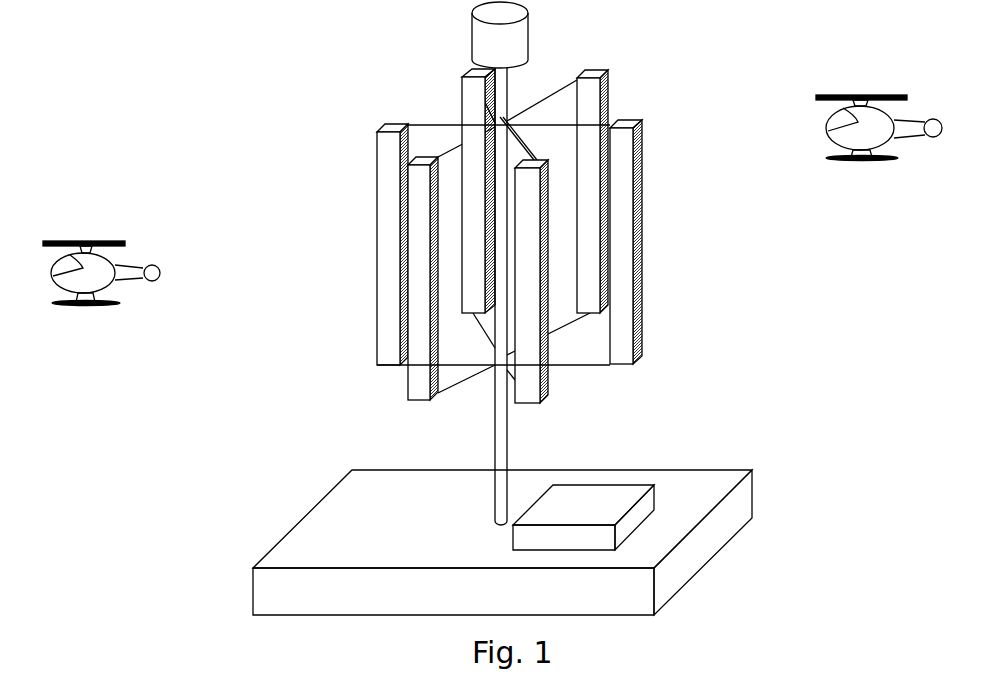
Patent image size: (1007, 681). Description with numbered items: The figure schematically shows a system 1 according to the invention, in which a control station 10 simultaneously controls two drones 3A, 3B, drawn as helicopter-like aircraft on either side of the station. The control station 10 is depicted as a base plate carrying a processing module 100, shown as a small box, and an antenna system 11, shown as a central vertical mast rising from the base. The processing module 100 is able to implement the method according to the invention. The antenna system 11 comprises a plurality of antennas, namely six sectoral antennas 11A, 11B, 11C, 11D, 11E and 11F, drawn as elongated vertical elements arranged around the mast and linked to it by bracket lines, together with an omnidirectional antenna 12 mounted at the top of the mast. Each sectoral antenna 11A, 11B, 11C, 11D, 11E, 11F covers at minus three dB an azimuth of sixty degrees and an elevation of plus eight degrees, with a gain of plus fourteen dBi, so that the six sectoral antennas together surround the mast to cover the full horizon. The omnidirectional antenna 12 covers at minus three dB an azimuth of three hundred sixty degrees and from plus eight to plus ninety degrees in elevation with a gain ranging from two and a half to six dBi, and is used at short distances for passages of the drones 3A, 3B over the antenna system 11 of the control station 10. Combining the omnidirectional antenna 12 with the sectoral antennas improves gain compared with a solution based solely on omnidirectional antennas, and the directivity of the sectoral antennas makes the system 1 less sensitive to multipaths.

The system 1 is at (757, 312).
The control station 10 is at (752, 500).
The processing module 100 is at (648, 508).
The antenna system 11 is at (512, 458).
The sectoral antenna 11A is at (642, 297).
The sectoral antenna 11B is at (608, 80).
The sectoral antenna 11C is at (460, 90).
The sectoral antenna 11D is at (377, 198).
The sectoral antenna 11E is at (407, 397).
The sectoral antenna 11F is at (548, 398).
The omnidirectional antenna 12 is at (473, 17).
The drone 3A is at (162, 275).
The drone 3B is at (902, 102).